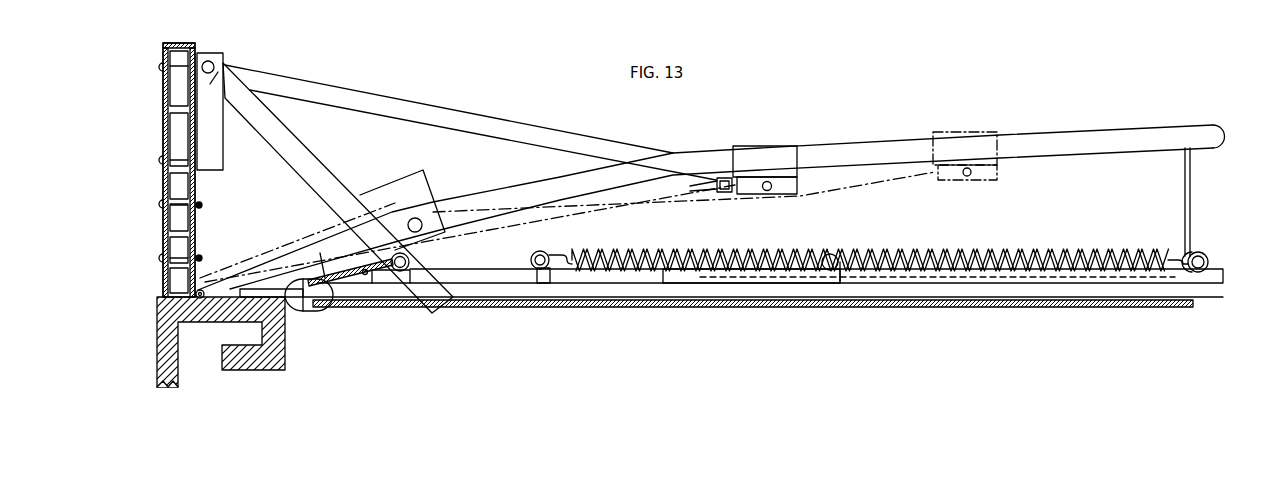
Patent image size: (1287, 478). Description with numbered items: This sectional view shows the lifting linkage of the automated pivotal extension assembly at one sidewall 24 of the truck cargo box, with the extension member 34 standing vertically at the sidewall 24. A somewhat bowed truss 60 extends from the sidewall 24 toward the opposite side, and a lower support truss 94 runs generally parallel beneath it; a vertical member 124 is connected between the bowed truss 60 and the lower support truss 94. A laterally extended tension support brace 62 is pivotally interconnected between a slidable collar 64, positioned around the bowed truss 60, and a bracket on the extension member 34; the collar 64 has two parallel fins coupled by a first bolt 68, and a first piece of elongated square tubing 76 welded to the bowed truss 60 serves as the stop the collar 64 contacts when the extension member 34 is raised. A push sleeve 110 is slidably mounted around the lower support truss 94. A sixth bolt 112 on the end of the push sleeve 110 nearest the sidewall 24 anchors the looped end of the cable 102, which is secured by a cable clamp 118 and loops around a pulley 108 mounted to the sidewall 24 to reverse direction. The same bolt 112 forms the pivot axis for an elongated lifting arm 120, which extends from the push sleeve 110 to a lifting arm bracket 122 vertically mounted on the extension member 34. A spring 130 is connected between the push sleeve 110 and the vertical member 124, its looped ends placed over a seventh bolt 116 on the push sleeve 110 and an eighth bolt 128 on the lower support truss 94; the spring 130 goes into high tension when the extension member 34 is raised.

The sidewall 24 is at (160, 353).
The extension member 34 is at (163, 97).
The bowed truss 60 is at (535, 190).
The tension support brace 62 is at (505, 110).
The slidable collar 64 is at (765, 158).
The first bolt 68 is at (770, 190).
The first piece of elongated square tubing 76 is at (727, 193).
The lower support truss 94 is at (882, 283).
The cable 102 is at (960, 308).
The pulley 108 is at (307, 312).
The push sleeve 110 is at (475, 287).
The sixth bolt 112 is at (410, 282).
The seventh bolt 116 is at (543, 273).
The cable clamp 118 is at (370, 275).
The lifting arm 120 is at (280, 122).
The lifting arm bracket 122 is at (226, 67).
The vertical member 124 is at (1193, 200).
The eighth bolt 128 is at (1208, 255).
The spring 130 is at (1050, 252).